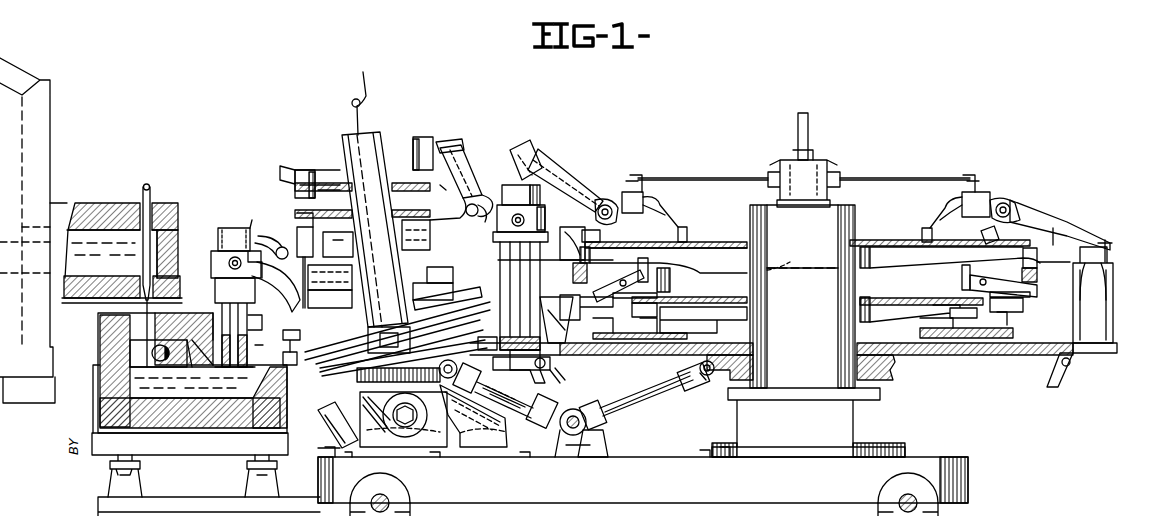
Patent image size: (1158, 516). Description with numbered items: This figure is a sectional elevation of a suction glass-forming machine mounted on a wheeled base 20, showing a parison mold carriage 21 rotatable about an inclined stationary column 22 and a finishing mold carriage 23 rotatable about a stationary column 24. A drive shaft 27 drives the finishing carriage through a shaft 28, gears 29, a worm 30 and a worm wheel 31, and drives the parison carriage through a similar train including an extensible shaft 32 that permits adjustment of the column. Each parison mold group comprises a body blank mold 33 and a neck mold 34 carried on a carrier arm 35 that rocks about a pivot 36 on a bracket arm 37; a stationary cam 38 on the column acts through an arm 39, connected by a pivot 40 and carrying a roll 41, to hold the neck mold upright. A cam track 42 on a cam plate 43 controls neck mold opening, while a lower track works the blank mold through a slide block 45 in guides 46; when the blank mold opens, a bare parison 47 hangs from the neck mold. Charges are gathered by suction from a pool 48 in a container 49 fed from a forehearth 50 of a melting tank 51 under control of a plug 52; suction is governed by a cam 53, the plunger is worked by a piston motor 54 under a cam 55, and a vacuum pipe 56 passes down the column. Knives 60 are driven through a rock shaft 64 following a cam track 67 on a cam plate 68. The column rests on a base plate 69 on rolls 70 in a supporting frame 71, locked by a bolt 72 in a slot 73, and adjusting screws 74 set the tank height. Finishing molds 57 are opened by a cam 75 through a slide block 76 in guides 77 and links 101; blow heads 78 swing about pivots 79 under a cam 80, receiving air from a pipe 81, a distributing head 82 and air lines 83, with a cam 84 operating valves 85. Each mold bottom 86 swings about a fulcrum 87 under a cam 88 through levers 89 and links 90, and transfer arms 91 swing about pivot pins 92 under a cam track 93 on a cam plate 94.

The wheeled base 20 is at (652, 456).
The parison mold carriage 21 is at (453, 369).
The stationary column 22 is at (385, 140).
The finishing mold carriage 23 is at (953, 358).
The stationary column 24 is at (855, 216).
The drive shaft 27 is at (565, 440).
The shaft 28 is at (625, 398).
The gears 29 is at (685, 390).
The worm 30 is at (707, 376).
The worm wheel 31 is at (893, 378).
The extensible shaft 32 is at (500, 405).
The body blank mold 33 is at (250, 349).
The neck mold 34 is at (215, 294).
The carrier frame or arm 35 is at (211, 251).
The pivot 36 is at (229, 265).
The bracket arm 37 is at (248, 226).
The stationary cam 38 is at (318, 170).
The arm 39 is at (290, 193).
The pivot 40 is at (278, 230).
The roll 41 is at (293, 172).
The cam track 42 is at (417, 258).
The stationary cam plate 43 is at (382, 291).
The slide block 45 is at (470, 318).
The guides 46 is at (447, 298).
The parison 47 is at (556, 313).
The pool of molten glass 48 is at (171, 353).
The container 49 is at (98, 381).
The forehearth 50 is at (106, 205).
The melting and refining tank 51 is at (50, 137).
The adjustable plug 52 is at (152, 196).
The cam 53 is at (389, 340).
The piston motor 54 is at (228, 228).
The cam 55 is at (388, 215).
The vacuum pipe 56 is at (364, 112).
The finishing mold 57 is at (541, 280).
The knife 60 is at (298, 376).
The rock shaft 64 is at (290, 335).
The stationary cam track 67 is at (313, 240).
The cam plate 68 is at (365, 193).
The base plate 69 is at (465, 450).
The rolls 70 is at (482, 450).
The supporting frame 71 is at (425, 448).
The locking bolt 72 is at (417, 415).
The slot 73 is at (395, 440).
The adjusting screws 74 is at (140, 466).
The stationary cam 75 is at (935, 297).
The slide block 76 is at (625, 358).
The guides 77 is at (690, 335).
The blow head 78 is at (525, 143).
The pivot 79 is at (606, 204).
The stationary cam 80 is at (603, 238).
The pipe 81 is at (808, 130).
The distributing head 82 is at (832, 165).
The air lines 83 is at (690, 178).
The stationary cam 84 is at (690, 238).
The valves 85 is at (648, 198).
The mold bottom 86 is at (1110, 358).
The fulcrum 87 is at (1070, 370).
The stationary cam 88 is at (638, 266).
The levers 89 is at (620, 283).
The links 90 is at (569, 375).
The transfer arm 91 is at (786, 259).
The pivot pin 92 is at (583, 258).
The stationary cam track 93 is at (655, 248).
The stationary cam plate 94 is at (735, 242).
The links 101 is at (821, 299).